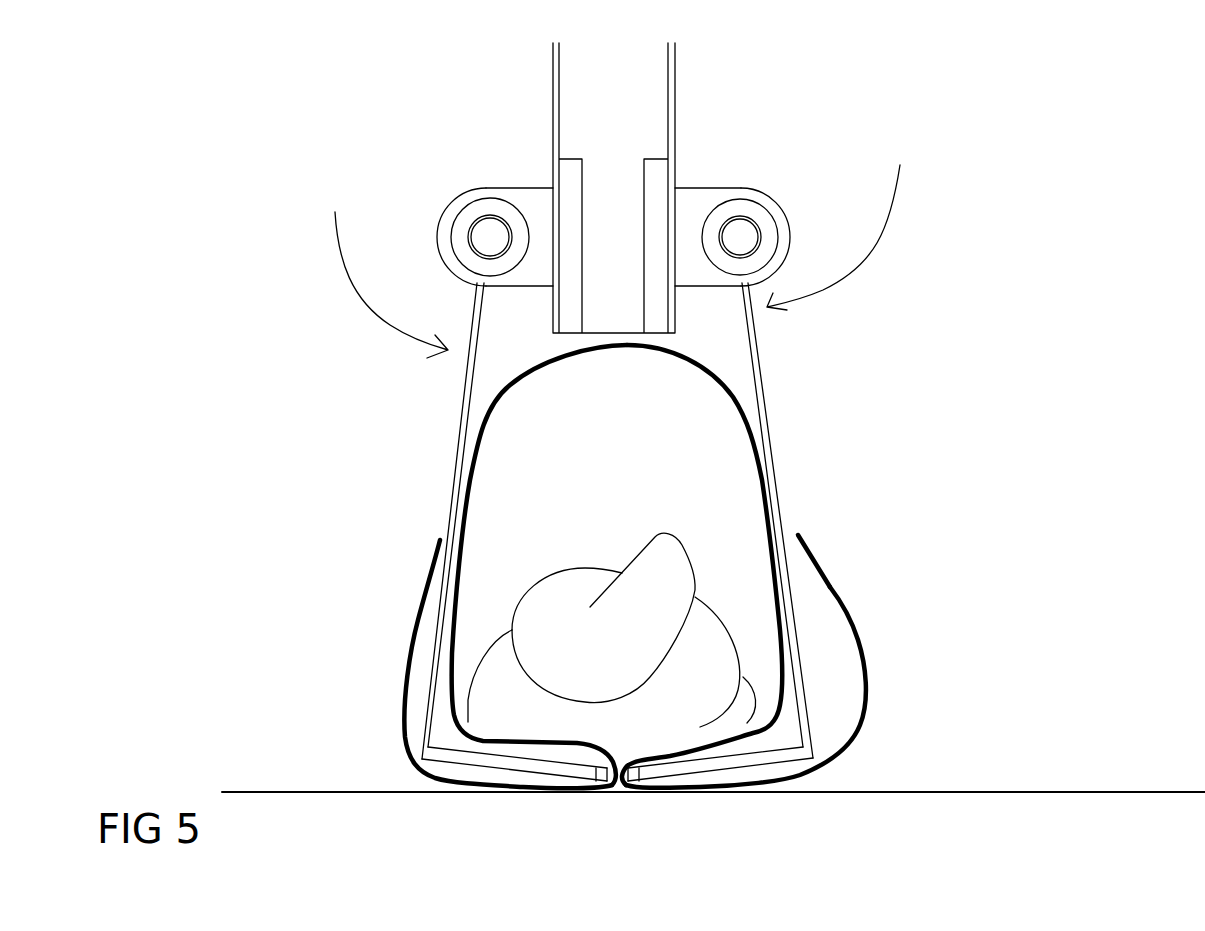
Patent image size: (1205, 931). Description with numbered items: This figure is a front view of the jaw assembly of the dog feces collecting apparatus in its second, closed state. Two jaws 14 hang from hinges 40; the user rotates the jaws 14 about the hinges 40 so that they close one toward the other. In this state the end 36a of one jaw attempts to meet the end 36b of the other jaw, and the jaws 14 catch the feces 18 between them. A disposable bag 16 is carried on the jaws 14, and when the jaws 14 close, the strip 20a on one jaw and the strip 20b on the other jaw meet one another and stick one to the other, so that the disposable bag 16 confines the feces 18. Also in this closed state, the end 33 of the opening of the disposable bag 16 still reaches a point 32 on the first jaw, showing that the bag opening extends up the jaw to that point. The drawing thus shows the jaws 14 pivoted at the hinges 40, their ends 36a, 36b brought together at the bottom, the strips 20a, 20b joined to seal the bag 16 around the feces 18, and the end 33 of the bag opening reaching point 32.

The jaw 14 is at (765, 397).
The disposable bag 16 is at (838, 598).
The feces 18 is at (617, 662).
The strip 20a is at (627, 768).
The strip 20b is at (603, 767).
The point of jaw 32 is at (785, 537).
The end of opening 33 is at (802, 534).
The end of jaw 36a is at (636, 772).
The end of jaw 36b is at (598, 772).
The hinge 40 is at (490, 231).